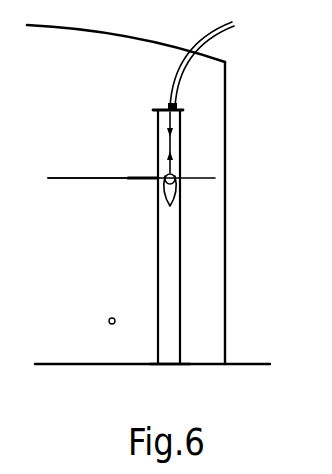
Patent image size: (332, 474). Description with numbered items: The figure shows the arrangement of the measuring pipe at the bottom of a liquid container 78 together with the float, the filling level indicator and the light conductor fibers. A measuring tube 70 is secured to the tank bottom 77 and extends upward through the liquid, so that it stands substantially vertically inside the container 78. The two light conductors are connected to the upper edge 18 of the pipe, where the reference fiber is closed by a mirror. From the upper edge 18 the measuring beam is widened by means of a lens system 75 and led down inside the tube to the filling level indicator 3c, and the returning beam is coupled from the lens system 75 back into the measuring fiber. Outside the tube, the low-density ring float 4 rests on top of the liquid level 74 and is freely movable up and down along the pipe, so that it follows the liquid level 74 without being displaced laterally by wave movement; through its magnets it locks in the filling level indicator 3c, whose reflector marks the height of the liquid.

The ring float 4 is at (140, 177).
The upper edge of the pipe 18 is at (184, 107).
The lens system 75 is at (183, 112).
The filling level indicator 3c is at (178, 201).
The measuring tube 70 is at (180, 285).
The liquid level 74 is at (88, 206).
The tank bottom 77 is at (167, 365).
The container 78 is at (113, 324).